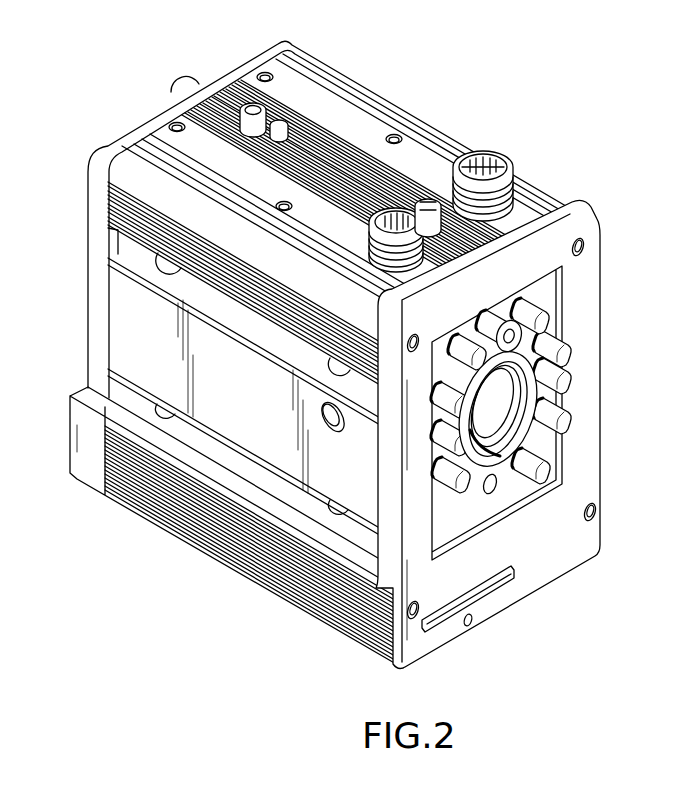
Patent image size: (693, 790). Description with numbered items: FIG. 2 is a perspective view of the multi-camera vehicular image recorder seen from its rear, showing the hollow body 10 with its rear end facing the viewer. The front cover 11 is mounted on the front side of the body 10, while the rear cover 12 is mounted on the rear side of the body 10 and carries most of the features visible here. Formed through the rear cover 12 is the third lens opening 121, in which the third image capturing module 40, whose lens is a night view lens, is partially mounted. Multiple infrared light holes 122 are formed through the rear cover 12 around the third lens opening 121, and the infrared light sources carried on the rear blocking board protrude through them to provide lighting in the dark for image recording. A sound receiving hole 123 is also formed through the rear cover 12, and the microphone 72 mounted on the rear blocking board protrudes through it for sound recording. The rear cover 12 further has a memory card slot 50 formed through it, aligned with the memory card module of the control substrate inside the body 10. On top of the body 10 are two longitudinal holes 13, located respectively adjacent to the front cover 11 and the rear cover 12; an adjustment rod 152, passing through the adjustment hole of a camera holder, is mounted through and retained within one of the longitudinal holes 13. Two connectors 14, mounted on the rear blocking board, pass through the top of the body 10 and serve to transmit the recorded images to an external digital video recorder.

The body 10 is at (440, 130).
The front cover 11 is at (280, 44).
The rear cover 12 is at (585, 268).
The longitudinal holes 13 is at (283, 125).
The connectors 14 is at (512, 170).
The third image capturing module 40 is at (515, 375).
The memory card slot 50 is at (518, 578).
The microphone 72 is at (525, 334).
The third lens opening 121 is at (522, 398).
The infrared light holes 122 is at (566, 428).
The sound receiving hole 123 is at (542, 293).
The adjustment rod 152 is at (245, 116).